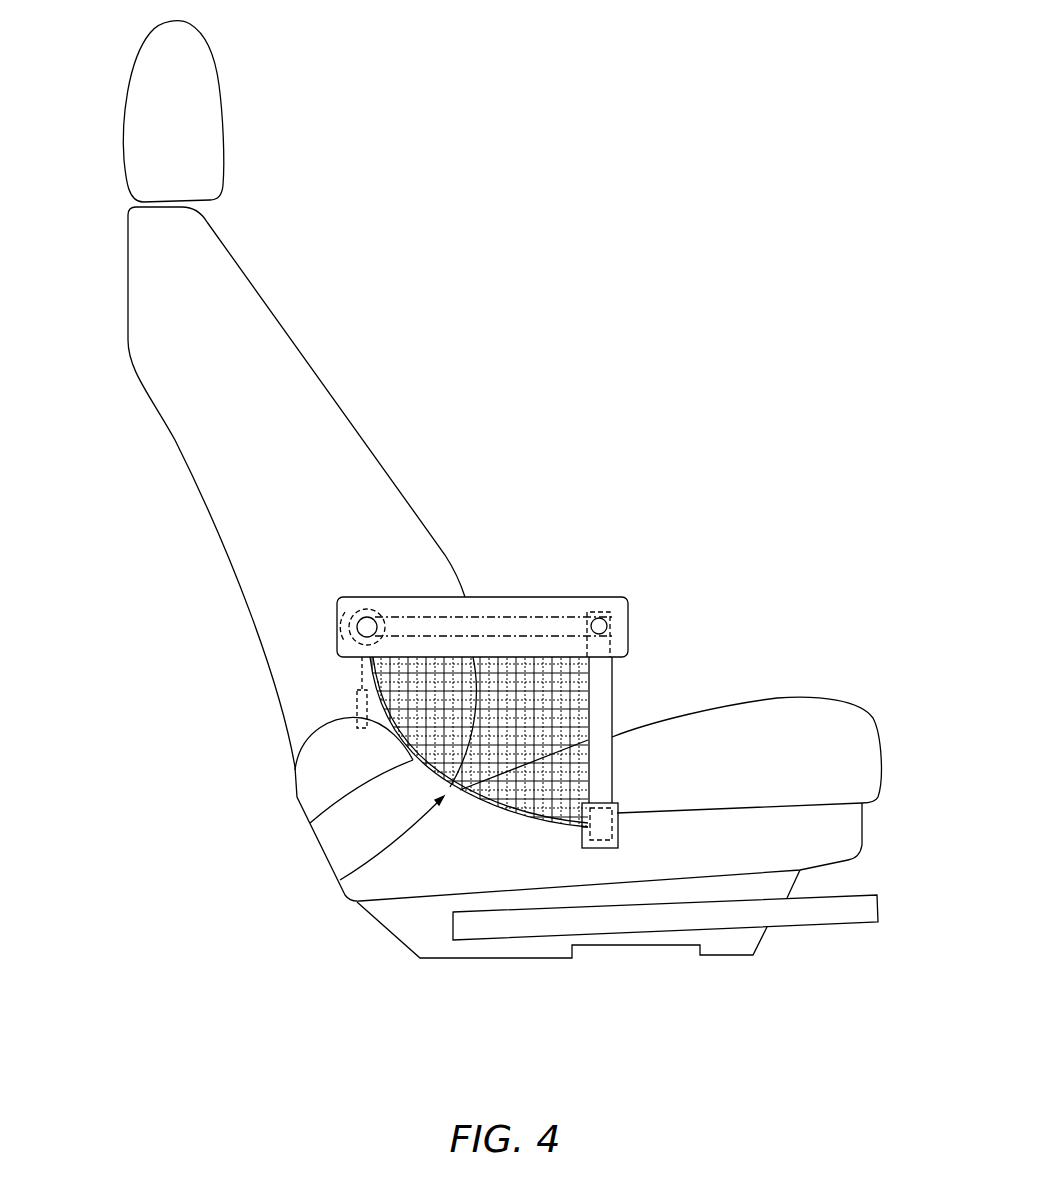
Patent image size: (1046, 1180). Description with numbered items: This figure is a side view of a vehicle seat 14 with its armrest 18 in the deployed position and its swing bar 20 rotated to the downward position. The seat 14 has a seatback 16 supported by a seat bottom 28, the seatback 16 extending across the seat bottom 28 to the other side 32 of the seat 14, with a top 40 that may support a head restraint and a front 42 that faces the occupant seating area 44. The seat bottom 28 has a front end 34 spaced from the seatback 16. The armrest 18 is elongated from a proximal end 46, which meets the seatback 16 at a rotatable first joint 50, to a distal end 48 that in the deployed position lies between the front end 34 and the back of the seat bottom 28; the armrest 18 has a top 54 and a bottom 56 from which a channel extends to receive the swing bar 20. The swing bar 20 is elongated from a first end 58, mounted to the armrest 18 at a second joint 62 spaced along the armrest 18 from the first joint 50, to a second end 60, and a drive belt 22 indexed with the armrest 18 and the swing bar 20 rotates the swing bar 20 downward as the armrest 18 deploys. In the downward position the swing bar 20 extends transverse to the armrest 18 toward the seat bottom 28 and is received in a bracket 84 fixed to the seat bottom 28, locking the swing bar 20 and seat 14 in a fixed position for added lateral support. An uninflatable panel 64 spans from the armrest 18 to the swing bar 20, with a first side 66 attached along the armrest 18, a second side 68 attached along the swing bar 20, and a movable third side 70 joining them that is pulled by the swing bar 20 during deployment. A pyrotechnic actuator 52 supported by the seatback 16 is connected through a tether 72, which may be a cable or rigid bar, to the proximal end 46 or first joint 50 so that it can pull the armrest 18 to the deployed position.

The seat 14 is at (124, 246).
The seatback 16 is at (127, 290).
The armrest 18 is at (623, 593).
The swing bar 20 is at (614, 683).
The drive belt 22 is at (512, 617).
The seat bottom 28 is at (842, 702).
The other side 32 is at (182, 337).
The front end 34 is at (878, 740).
The top 40 is at (127, 210).
The front 42 is at (259, 296).
The occupant seating area 44 is at (472, 322).
The proximal end 46 is at (352, 597).
The distal end 48 is at (630, 646).
The first joint 50 is at (345, 607).
The pyrotechnic actuator 52 is at (360, 710).
The top 54 is at (480, 597).
The bottom 56 is at (422, 656).
The first end 58 is at (620, 616).
The second end 60 is at (604, 840).
The second joint 62 is at (600, 617).
The panel 64 is at (340, 880).
The first side 66 is at (555, 663).
The second side 68 is at (590, 720).
The third side 70 is at (310, 823).
The tether 72 is at (360, 670).
The bracket 84 is at (618, 808).